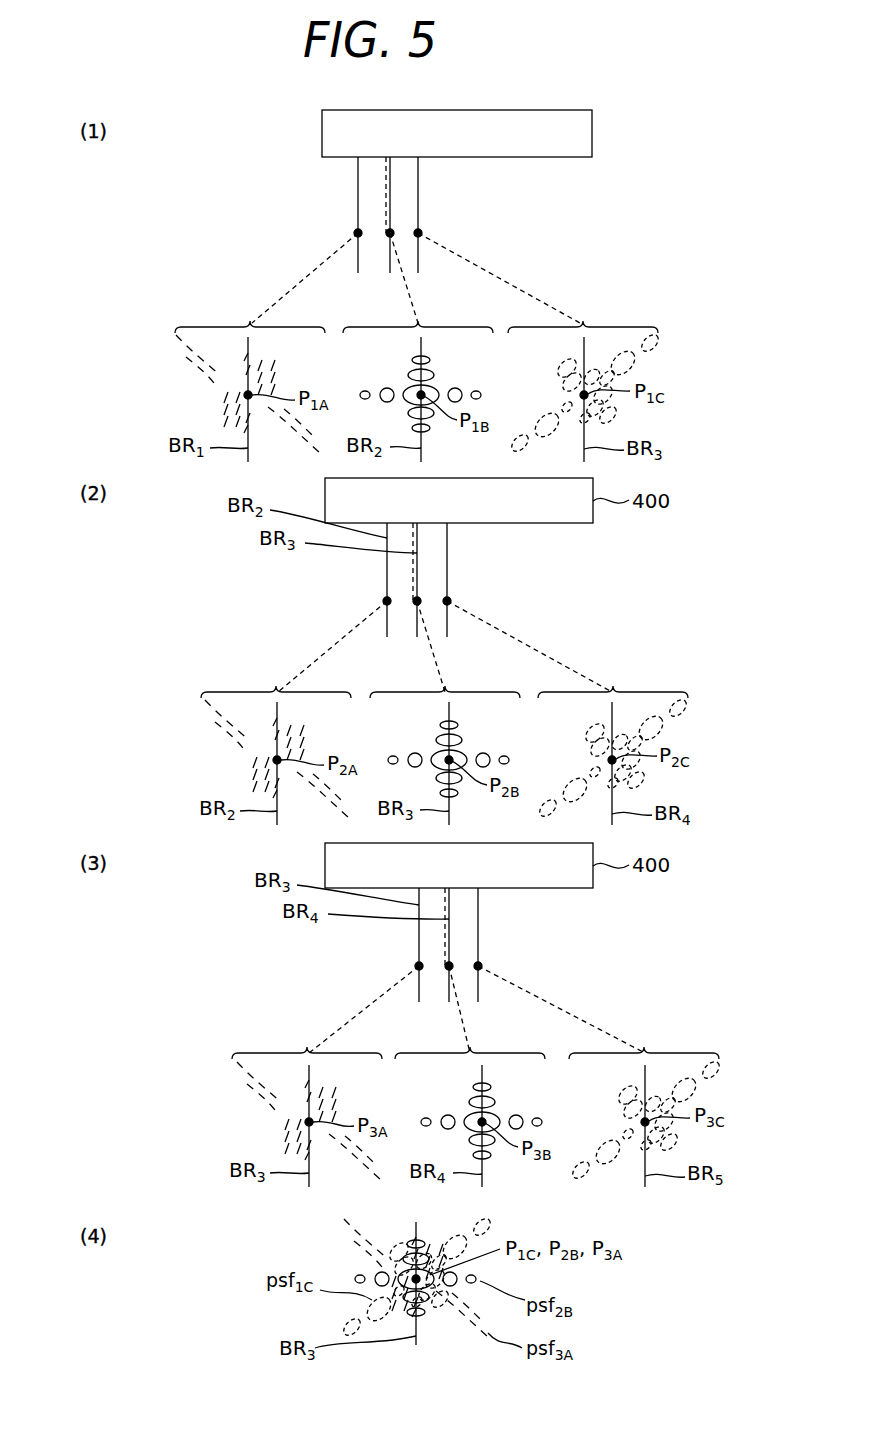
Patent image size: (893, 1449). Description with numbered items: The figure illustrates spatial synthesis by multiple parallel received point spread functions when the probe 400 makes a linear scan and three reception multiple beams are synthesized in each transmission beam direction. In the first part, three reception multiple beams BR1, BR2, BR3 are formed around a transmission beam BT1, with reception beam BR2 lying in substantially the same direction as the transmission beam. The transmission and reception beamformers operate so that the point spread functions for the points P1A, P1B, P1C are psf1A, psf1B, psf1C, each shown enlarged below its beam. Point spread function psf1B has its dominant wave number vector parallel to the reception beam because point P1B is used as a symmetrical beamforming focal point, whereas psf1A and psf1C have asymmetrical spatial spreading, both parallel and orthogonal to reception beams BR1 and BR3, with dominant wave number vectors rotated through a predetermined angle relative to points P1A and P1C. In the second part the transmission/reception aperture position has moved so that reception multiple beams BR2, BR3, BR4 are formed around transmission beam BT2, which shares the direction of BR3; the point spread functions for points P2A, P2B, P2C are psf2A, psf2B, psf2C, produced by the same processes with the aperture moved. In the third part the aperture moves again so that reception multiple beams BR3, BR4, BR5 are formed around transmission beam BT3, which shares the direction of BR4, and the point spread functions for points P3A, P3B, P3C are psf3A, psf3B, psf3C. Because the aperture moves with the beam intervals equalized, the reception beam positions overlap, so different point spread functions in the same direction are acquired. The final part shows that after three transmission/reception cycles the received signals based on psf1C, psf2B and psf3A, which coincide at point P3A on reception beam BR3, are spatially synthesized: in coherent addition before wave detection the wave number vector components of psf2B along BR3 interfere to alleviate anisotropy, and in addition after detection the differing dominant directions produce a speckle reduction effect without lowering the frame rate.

The probe 400 is at (592, 133).
The reception beam BR1 is at (358, 170).
The reception beam BR2 is at (390, 187).
The reception beam BR3 is at (418, 212).
The reception beam BR4 is at (447, 580).
The reception beam BR5 is at (478, 945).
The transmission beam BT1 is at (390, 225).
The transmission beam BT2 is at (417, 590).
The transmission beam BT3 is at (449, 955).
The point P1A is at (358, 235).
The point P1B is at (390, 236).
The point P1C is at (420, 233).
The point P2A is at (387, 603).
The point P2B is at (417, 604).
The point P2C is at (449, 601).
The point P3A is at (419, 968).
The point P3B is at (449, 969).
The point P3C is at (480, 966).
The point spread function psf1A is at (240, 393).
The point spread function psf1B is at (410, 385).
The point spread function psf1C is at (565, 402).
The point spread function psf2A is at (270, 758).
The point spread function psf2B is at (440, 750).
The point spread function psf2C is at (595, 765).
The point spread function psf3A is at (302, 1120).
The point spread function psf3B is at (473, 1112).
The point spread function psf3C is at (630, 1126).